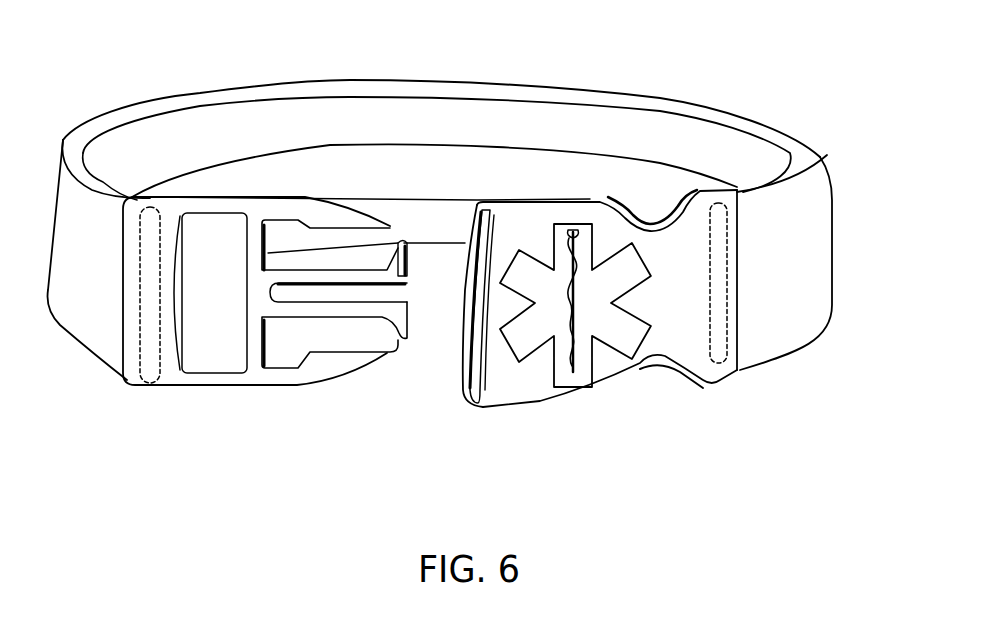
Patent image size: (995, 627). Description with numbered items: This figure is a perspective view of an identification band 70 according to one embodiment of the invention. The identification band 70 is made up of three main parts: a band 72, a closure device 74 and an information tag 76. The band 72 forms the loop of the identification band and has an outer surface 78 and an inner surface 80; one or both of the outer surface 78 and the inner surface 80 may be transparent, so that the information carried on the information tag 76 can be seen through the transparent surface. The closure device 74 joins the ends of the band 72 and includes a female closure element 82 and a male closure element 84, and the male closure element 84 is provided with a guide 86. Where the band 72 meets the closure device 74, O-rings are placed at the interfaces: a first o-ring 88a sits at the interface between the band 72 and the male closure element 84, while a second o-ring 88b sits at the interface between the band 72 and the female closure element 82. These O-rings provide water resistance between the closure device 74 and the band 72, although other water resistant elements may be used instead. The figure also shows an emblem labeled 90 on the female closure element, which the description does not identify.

The identification band 70 is at (465, 196).
The band 72 is at (812, 245).
The closure device 74 is at (527, 407).
The information tag 76 is at (413, 160).
The outer surface 78 is at (63, 140).
The inner surface 80 is at (272, 118).
The female closure element 82 is at (703, 387).
The male closure element 84 is at (303, 390).
The guide 86 is at (213, 350).
The first o-ring 88a is at (137, 380).
The second o-ring 88b is at (727, 343).
The medical symbol emblem 90 is at (577, 347).